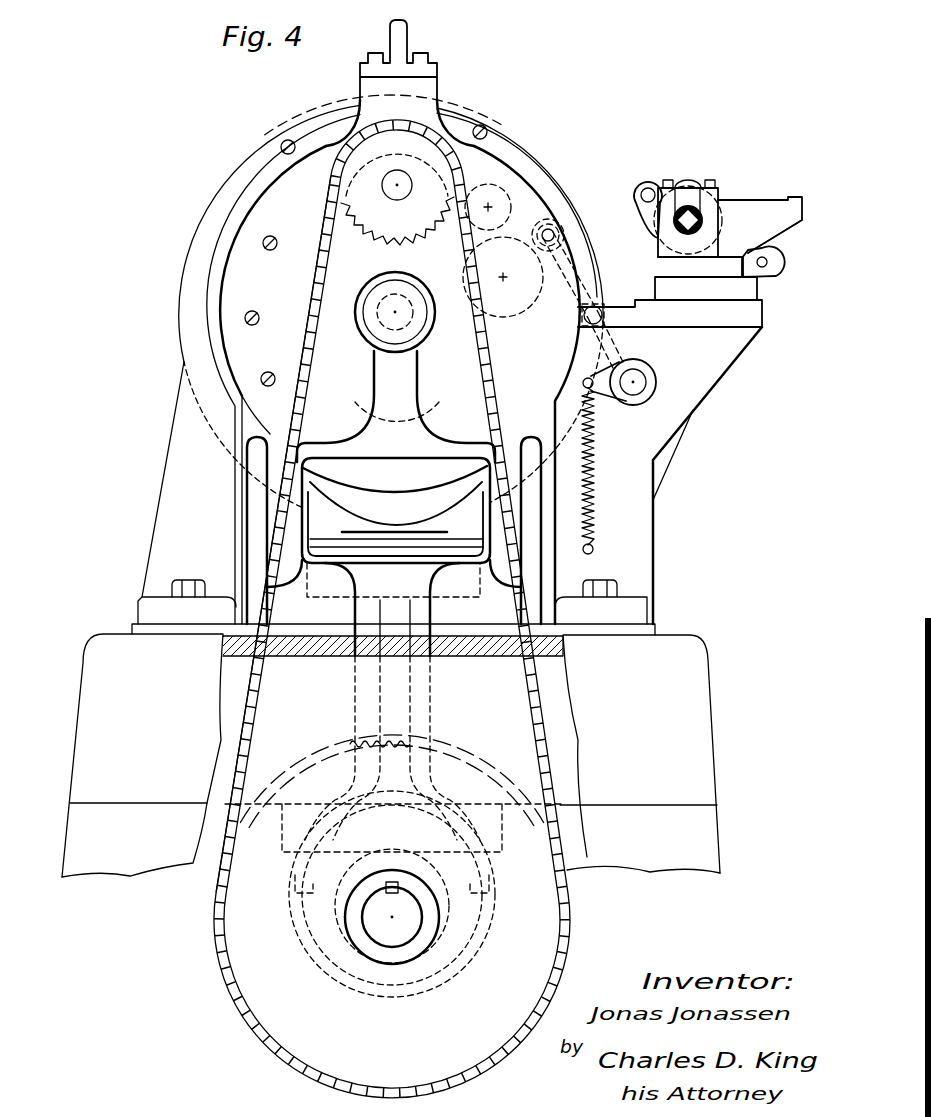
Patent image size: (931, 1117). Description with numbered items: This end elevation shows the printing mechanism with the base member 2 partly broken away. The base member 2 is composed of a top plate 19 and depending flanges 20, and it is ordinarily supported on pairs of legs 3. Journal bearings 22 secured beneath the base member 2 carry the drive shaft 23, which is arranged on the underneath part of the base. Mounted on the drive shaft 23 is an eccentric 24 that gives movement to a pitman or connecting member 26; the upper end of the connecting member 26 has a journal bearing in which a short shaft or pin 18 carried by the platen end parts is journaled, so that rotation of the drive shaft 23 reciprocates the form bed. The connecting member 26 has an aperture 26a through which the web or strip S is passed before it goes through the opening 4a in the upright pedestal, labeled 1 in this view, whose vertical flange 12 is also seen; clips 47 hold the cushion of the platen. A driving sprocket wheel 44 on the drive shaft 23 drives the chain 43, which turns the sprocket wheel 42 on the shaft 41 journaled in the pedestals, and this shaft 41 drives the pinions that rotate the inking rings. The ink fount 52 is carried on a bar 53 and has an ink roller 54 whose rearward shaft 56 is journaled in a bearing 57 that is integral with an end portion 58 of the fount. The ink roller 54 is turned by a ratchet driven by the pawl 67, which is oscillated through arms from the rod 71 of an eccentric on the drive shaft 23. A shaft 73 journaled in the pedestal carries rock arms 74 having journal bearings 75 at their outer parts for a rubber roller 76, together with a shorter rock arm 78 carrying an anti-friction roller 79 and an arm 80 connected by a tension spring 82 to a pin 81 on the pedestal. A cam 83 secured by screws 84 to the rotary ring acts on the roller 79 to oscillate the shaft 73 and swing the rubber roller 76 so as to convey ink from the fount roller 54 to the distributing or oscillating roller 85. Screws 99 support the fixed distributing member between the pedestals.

The frame 1 is at (163, 532).
The base member 2 is at (142, 755).
The legs 3 is at (134, 840).
The opening in the pedestal 4a is at (340, 552).
The vertical flanges 12 is at (405, 40).
The short shafts or pins 18 is at (372, 298).
The top plate 19 is at (495, 656).
The depending flanges 20 is at (640, 754).
The journal bearings 22 is at (457, 937).
The drive shaft 23 is at (397, 940).
The eccentrics 24 is at (320, 866).
The pitman or connecting member 26 is at (262, 460).
The aperture 26a is at (396, 547).
The shaft 41 is at (401, 199).
The sprocket wheel 42 is at (382, 185).
The chain 43 is at (311, 366).
The driving sprocket wheel 44 is at (568, 891).
The clips 47 is at (445, 553).
The ink fount 52 is at (760, 214).
The bar 53 is at (756, 289).
The ink roller 54 is at (692, 186).
The shaft 56 is at (691, 232).
The bearings 57 is at (668, 205).
The end portions 58 is at (785, 221).
The pawl 67 is at (642, 224).
The rod 71 is at (680, 456).
The shaft 73 is at (641, 390).
The rock arms 74 is at (670, 315).
The journal bearings 75 is at (557, 229).
The rubber roller 76 is at (540, 194).
The shorter rock arm 78 is at (637, 350).
The anti-friction roller 79 is at (600, 293).
The arm 80 is at (600, 388).
The pin 81 is at (594, 548).
The tension spring 82 is at (596, 487).
The cam 83 is at (512, 155).
The screws 84 is at (280, 147).
The distributing or oscillating roller 85 is at (519, 304).
The screws 99 is at (268, 371).
The web or strip S is at (342, 534).